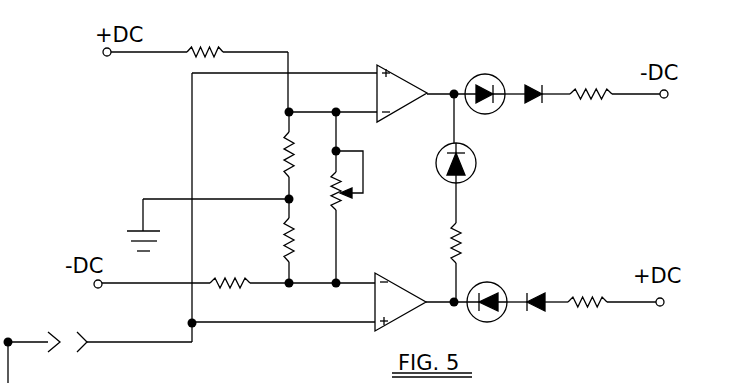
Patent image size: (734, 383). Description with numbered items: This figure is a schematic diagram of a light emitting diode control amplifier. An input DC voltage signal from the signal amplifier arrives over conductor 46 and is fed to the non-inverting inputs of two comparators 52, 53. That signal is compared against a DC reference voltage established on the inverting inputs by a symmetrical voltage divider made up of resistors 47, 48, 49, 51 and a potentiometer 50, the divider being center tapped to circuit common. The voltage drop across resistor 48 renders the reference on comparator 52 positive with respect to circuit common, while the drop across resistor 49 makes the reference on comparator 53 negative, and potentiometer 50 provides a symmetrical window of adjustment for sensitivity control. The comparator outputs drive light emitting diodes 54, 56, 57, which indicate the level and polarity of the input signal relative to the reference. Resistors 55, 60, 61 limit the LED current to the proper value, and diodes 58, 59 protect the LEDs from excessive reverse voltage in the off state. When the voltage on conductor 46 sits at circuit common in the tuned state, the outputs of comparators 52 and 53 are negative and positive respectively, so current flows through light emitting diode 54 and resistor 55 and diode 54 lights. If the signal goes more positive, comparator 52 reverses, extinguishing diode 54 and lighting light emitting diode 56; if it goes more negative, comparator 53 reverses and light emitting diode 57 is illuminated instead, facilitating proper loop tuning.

The conductor 46 is at (66, 333).
The voltage divider resistor 47 is at (205, 40).
The voltage divider resistor 48 is at (275, 155).
The voltage divider resistor 49 is at (274, 241).
The potentiometer 50 is at (334, 197).
The voltage divider resistor 51 is at (230, 269).
The comparator 52 is at (402, 90).
The comparator 53 is at (400, 296).
The light emitting diode 54 is at (472, 163).
The resistor 55 is at (471, 243).
The light emitting diode 56 is at (485, 81).
The light emitting diode 57 is at (487, 315).
The diode 58 is at (535, 82).
The diode 59 is at (535, 287).
The resistor 60 is at (591, 80).
The resistor 61 is at (587, 285).